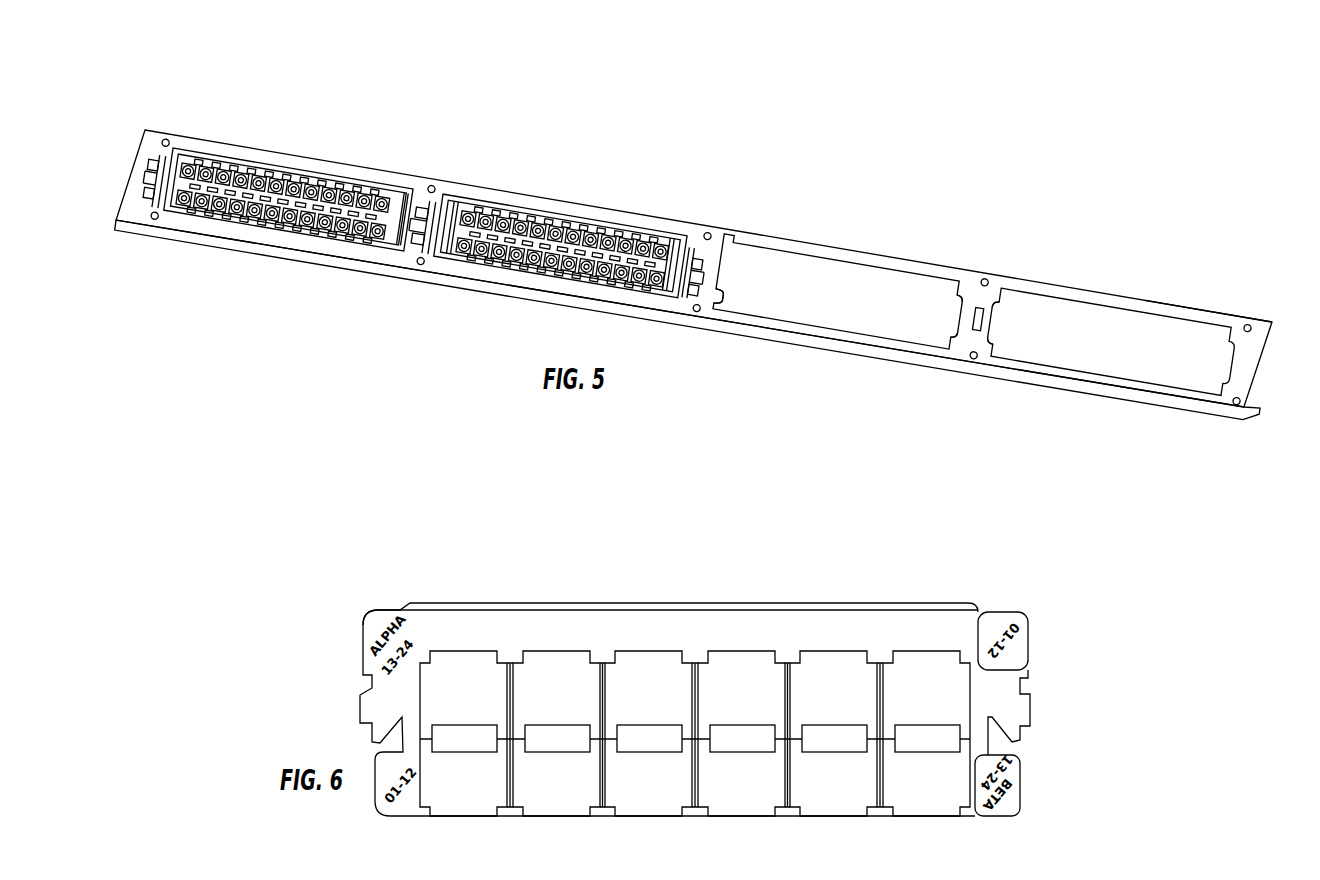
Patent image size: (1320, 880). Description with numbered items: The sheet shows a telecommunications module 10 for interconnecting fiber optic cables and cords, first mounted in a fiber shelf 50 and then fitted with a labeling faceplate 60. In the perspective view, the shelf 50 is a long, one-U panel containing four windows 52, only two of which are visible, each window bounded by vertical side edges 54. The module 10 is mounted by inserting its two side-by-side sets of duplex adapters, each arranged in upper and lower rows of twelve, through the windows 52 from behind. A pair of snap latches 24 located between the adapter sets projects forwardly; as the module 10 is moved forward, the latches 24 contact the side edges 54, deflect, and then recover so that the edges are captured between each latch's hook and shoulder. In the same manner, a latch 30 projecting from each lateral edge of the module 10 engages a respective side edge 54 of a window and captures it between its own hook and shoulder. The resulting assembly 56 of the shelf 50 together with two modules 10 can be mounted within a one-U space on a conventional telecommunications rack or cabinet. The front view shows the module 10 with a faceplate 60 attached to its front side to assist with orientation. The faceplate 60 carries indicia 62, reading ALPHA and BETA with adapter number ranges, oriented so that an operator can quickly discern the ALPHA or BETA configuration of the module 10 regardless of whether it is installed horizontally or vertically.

In FIG. 5, the telecommunications module 10 is at (580, 196).
In FIG. 5, the snap latch 24 is at (418, 206).
In FIG. 5, the latch 30 is at (157, 158).
In FIG. 5, the fiber shelf 50 is at (1237, 428).
In FIG. 5, the window 52 is at (800, 308).
In FIG. 5, the vertical side edge 54 is at (966, 317).
In FIG. 5, the assembly 56 is at (1228, 278).
In FIG. 6, the faceplate 60 is at (993, 612).
In FIG. 6, the indicia 62 is at (363, 640).